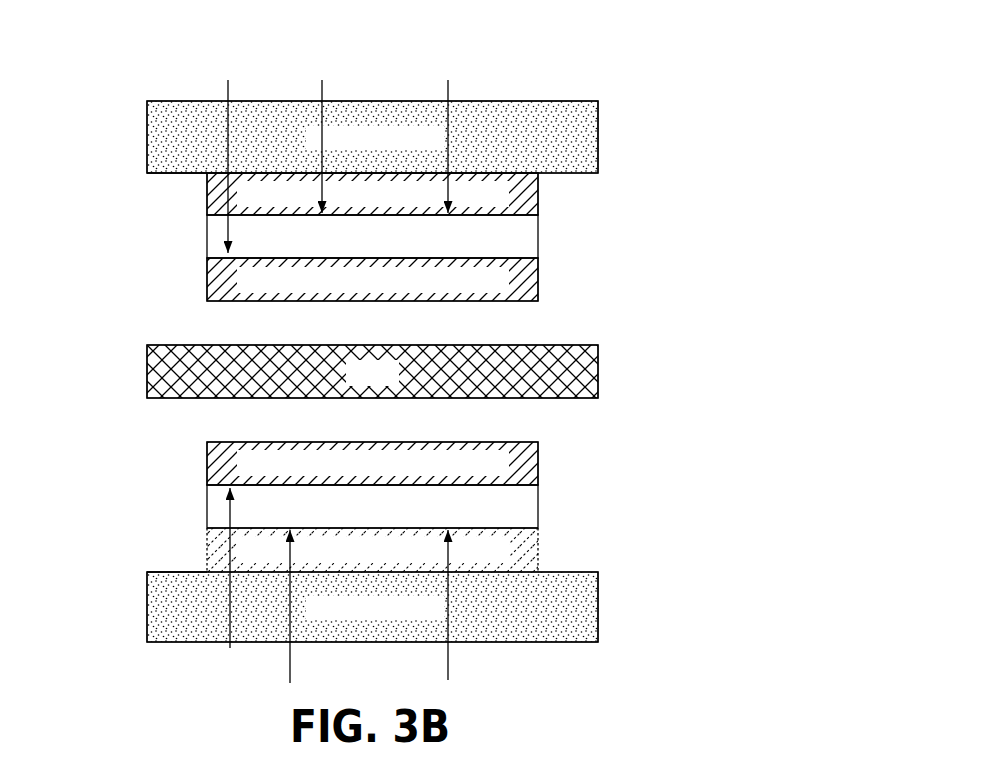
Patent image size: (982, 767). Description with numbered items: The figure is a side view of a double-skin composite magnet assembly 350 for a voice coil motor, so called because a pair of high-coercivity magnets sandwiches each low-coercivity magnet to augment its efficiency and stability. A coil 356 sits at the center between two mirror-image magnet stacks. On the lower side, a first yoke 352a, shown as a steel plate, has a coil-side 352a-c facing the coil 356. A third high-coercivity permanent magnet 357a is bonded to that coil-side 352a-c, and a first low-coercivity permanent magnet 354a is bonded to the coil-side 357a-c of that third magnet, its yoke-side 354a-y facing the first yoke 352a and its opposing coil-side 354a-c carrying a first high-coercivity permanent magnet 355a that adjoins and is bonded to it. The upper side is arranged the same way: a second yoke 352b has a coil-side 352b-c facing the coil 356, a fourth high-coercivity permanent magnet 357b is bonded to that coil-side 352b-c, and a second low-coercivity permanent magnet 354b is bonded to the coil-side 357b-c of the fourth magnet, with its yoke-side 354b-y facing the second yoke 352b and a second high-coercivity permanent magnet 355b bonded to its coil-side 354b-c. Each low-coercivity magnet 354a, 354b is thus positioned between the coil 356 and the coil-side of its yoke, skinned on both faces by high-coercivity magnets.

The double-skin composite magnet assembly 350 is at (130, 65).
The second yoke 352b is at (584, 128).
The coil-side of the second yoke 352b-c is at (165, 177).
The coil-side of the second low-coercivity permanent magnet 354b-c is at (229, 153).
The yoke-side of the second low-coercivity permanent magnet 354b-y is at (330, 133).
The coil-side of the fourth high-coercivity permanent magnet 357b-c is at (454, 132).
The fourth high-coercivity permanent magnet 357b is at (525, 197).
The second low-coercivity permanent magnet 354b is at (527, 238).
The second high-coercivity permanent magnet 355b is at (527, 283).
The coil 356 is at (588, 367).
The first high-coercivity permanent magnet 355a is at (538, 463).
The first low-coercivity permanent magnet 354a is at (532, 505).
The third high-coercivity permanent magnet 357a is at (538, 548).
The first yoke 352a is at (580, 605).
The coil-side of the first yoke 352a-c is at (162, 570).
The coil-side of the first low-coercivity permanent magnet 354a-c is at (230, 648).
The yoke-side of the first low-coercivity permanent magnet 354a-y is at (290, 683).
The coil-side of the third high-coercivity permanent magnet 357a-c is at (448, 680).